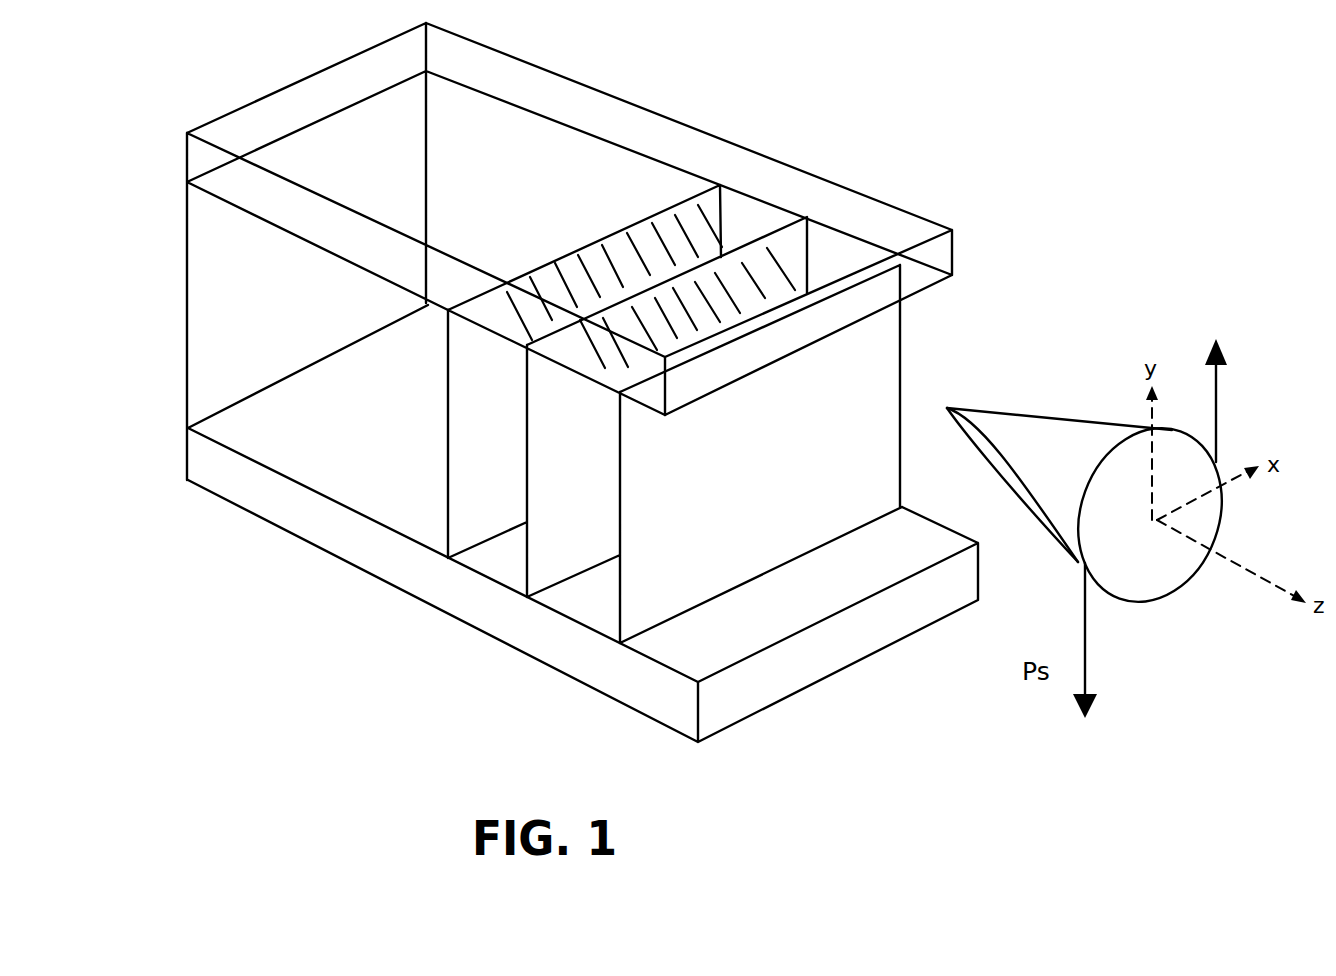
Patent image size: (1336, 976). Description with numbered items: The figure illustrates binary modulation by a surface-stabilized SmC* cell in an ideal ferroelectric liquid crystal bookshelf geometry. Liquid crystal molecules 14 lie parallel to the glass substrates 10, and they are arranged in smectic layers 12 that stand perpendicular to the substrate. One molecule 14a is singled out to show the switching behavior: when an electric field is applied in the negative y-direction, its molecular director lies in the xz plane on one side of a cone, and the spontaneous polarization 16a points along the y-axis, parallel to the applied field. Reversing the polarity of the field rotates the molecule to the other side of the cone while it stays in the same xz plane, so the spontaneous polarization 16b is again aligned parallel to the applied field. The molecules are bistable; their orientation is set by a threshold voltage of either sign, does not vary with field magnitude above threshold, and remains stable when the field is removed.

The glass substrates 10 is at (187, 158).
The smectic layers 12 is at (450, 493).
The liquid crystal molecules 14 is at (780, 258).
The molecule 14a is at (992, 447).
The spontaneous polarization 16a is at (1085, 667).
The spontaneous polarization 16b is at (1216, 408).